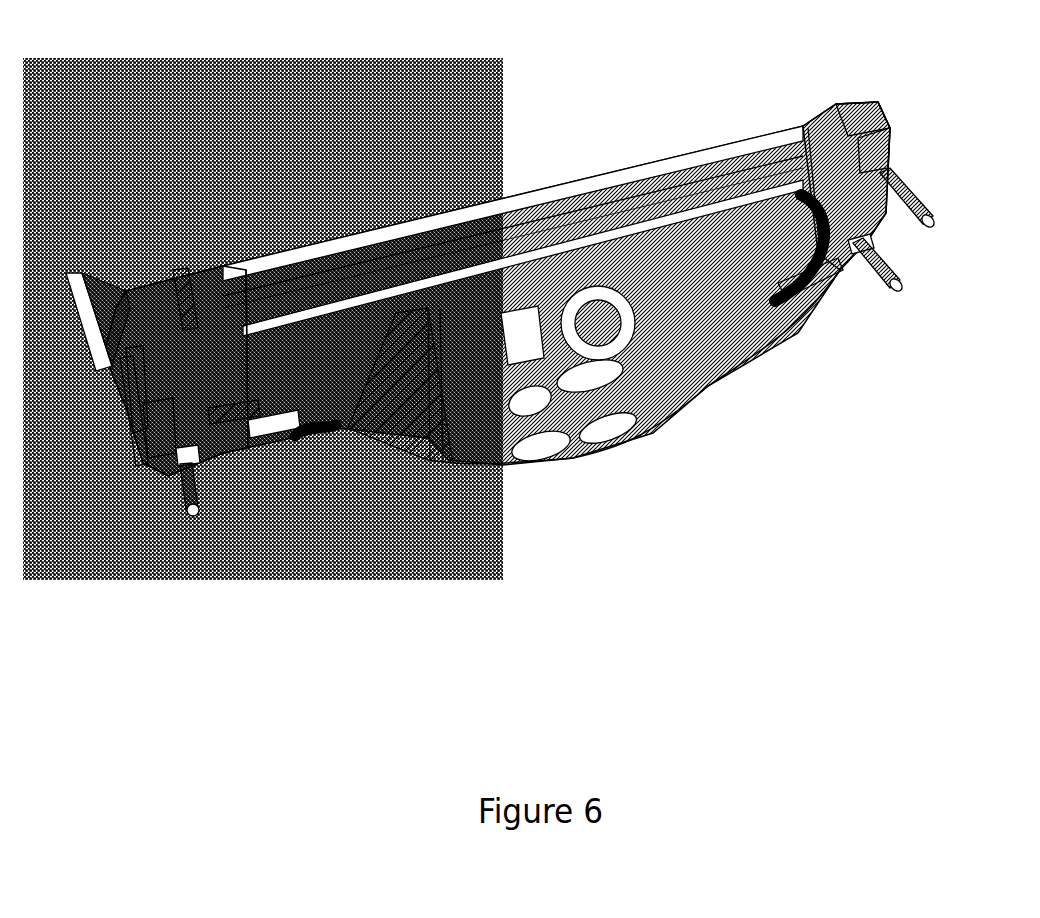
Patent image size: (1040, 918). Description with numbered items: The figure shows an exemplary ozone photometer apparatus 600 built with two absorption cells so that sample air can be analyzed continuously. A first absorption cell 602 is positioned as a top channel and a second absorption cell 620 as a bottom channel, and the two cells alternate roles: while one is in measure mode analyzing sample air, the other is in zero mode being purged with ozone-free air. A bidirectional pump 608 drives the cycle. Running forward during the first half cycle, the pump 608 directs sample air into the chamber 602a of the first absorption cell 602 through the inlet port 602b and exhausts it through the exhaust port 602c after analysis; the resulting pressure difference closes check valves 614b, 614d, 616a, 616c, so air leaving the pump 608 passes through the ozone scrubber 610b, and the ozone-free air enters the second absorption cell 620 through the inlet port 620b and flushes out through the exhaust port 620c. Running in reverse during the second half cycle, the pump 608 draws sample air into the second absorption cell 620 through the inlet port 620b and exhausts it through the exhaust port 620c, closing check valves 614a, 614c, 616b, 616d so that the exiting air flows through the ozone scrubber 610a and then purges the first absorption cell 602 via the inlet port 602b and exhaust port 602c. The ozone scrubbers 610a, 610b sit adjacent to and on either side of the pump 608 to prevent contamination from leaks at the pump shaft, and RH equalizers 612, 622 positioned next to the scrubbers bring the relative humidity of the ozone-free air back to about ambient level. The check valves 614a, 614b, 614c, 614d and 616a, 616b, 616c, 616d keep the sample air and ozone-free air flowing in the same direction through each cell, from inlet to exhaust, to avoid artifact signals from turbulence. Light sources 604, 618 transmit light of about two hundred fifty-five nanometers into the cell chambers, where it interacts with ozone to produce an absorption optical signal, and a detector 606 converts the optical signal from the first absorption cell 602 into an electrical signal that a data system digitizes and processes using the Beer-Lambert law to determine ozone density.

The ozone photometer apparatus 600 is at (213, 88).
The first absorption cell 602 is at (226, 270).
The chamber 602a is at (372, 240).
The inlet port 602b is at (132, 368).
The exhaust port 602c is at (872, 142).
The light source 604 is at (90, 282).
The detector 606 is at (876, 108).
The bidirectional pump 608 is at (528, 300).
The ozone scrubber 610a is at (705, 355).
The ozone scrubber 610b is at (440, 440).
The RH equalizer 612 is at (790, 300).
The check valve 614a is at (145, 417).
The check valve 614b is at (195, 305).
The check valve 614c is at (830, 150).
The check valve 614d is at (925, 195).
The check valve 616a is at (180, 500).
The check valve 616b is at (218, 432).
The check valve 616c is at (812, 265).
The check valve 616d is at (910, 275).
The light source 618 is at (138, 448).
The second absorption cell 620 is at (253, 405).
The inlet port 620b is at (185, 455).
The exhaust port 620c is at (862, 238).
The RH equalizer 622 is at (318, 448).